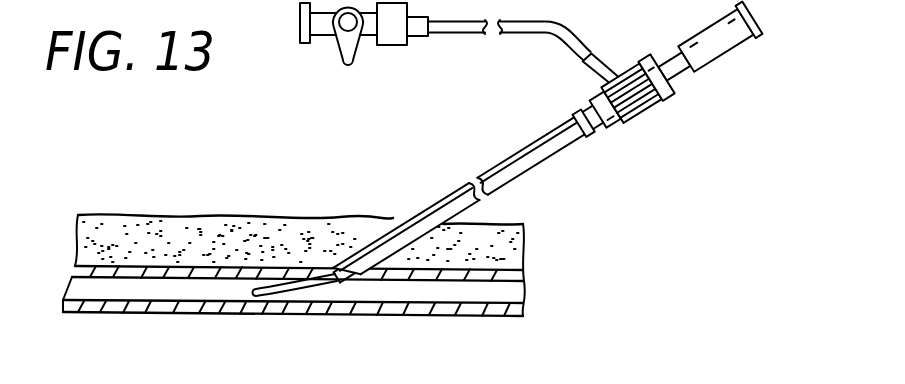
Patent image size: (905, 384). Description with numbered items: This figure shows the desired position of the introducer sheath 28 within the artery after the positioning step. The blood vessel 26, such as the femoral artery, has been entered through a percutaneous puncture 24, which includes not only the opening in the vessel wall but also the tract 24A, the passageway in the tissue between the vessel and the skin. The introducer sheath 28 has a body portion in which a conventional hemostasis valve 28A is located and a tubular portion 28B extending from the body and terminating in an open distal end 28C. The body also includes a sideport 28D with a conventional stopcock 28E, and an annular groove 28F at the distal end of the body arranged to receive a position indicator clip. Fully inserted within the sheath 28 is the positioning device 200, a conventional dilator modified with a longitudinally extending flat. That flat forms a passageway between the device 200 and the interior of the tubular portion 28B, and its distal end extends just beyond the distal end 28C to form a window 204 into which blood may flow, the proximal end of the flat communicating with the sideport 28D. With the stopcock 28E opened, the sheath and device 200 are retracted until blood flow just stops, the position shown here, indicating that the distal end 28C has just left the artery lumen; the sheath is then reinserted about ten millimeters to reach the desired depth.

The percutaneous puncture 24 is at (372, 280).
The tract 24A is at (372, 228).
The blood vessel 26 is at (503, 282).
The introducer sheath 28 is at (505, 158).
The hemostasis valve 28A is at (661, 108).
The tubular portion 28B is at (474, 180).
The distal end 28C is at (347, 257).
The sideport 28D is at (574, 26).
The stopcock 28E is at (345, 64).
The annular groove 28F is at (607, 132).
The positioning device 200 is at (273, 293).
The window 204 is at (333, 280).